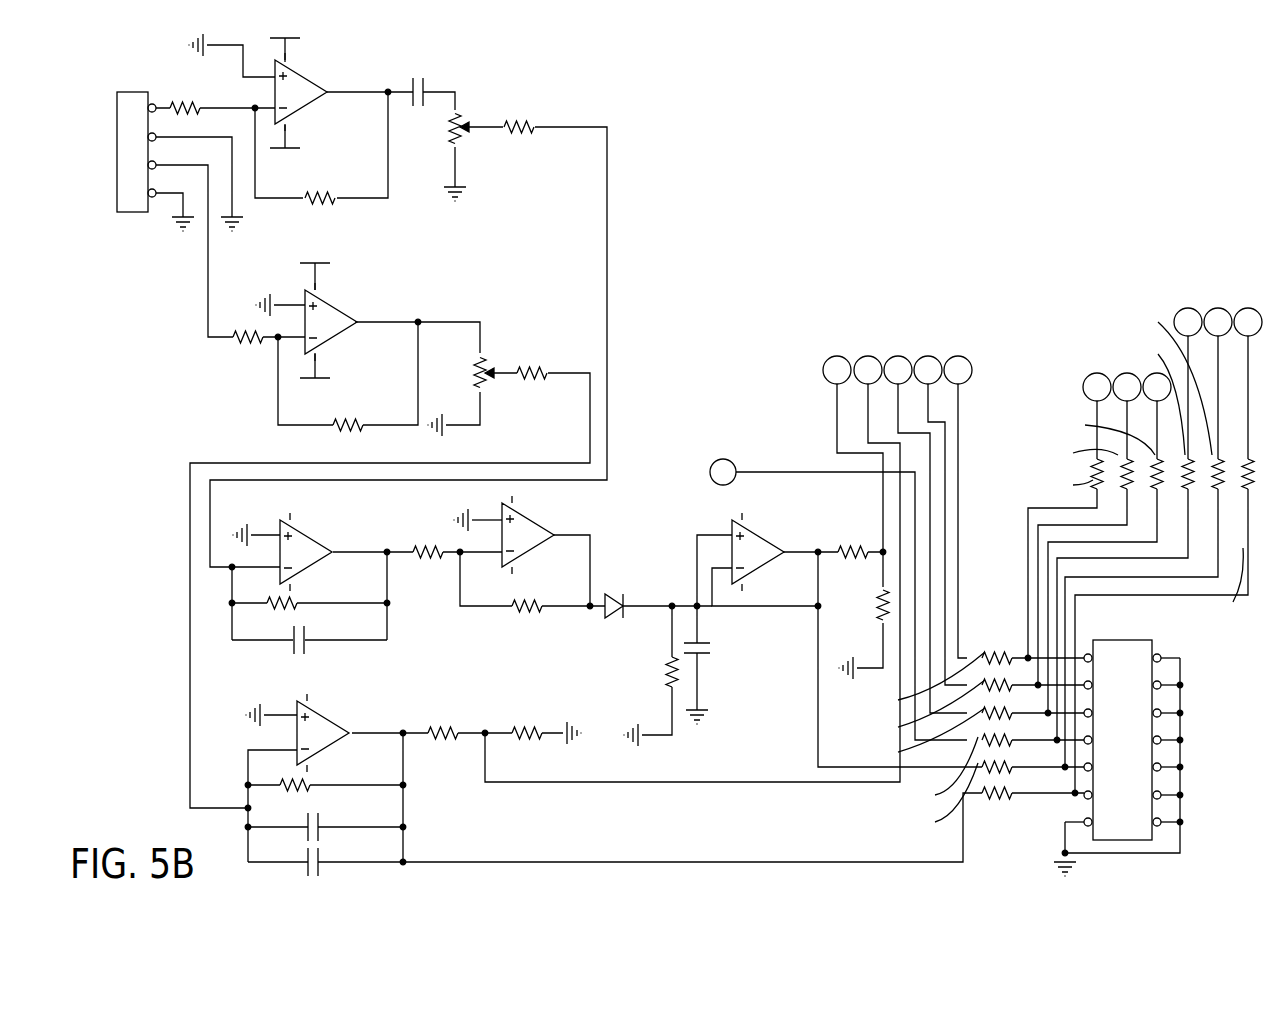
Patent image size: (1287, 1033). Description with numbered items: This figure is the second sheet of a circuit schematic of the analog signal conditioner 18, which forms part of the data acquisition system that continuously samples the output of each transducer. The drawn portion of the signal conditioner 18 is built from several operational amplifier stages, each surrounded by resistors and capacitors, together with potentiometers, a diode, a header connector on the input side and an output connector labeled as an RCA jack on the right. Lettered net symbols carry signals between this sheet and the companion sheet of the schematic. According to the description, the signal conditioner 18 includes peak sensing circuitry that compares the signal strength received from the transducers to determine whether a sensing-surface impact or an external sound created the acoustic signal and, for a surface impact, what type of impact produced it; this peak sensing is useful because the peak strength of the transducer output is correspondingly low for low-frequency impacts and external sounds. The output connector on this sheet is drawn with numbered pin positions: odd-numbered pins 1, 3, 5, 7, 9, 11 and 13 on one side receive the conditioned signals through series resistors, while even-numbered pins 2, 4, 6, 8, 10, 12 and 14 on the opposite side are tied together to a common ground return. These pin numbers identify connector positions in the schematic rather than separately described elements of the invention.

The signal conditioner 18 is at (689, 453).
The connector JP5 pin 1 is at (1096, 659).
The connector JP5 pin 2 is at (1158, 659).
The connector JP5 pin 3 is at (1096, 686).
The connector JP5 pin 4 is at (1158, 686).
The connector JP5 pin 5 is at (1096, 714).
The connector JP5 pin 6 is at (1158, 714).
The connector JP5 pin 7 is at (1096, 741).
The connector JP5 pin 8 is at (1158, 741).
The connector JP5 pin 9 is at (1096, 768).
The connector JP5 pin 10 is at (1153, 768).
The connector JP5 pin 11 is at (1102, 796).
The connector JP5 pin 12 is at (1153, 796).
The connector JP5 pin 13 is at (1092, 823).
The connector JP5 pin 14 is at (1153, 823).